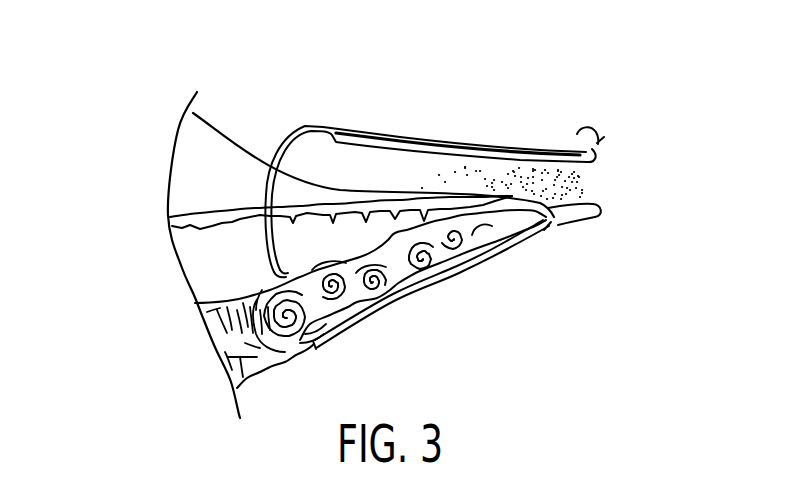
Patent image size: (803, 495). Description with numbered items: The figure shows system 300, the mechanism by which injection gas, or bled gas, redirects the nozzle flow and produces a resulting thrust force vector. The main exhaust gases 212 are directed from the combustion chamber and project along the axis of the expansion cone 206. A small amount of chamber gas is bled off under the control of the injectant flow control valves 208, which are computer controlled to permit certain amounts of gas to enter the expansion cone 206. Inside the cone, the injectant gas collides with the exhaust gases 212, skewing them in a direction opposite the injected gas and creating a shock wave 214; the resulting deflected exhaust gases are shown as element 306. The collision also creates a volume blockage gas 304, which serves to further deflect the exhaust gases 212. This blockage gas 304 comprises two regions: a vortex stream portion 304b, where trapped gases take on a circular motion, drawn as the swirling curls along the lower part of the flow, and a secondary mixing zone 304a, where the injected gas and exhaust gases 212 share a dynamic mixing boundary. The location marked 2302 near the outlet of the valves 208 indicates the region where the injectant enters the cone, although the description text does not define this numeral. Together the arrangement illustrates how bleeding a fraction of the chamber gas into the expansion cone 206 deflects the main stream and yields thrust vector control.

The system 300 is at (465, 183).
The expansion cone 206 is at (468, 139).
The exhaust gases 212 is at (580, 184).
The injectant flow control valves 208 is at (562, 224).
The cannula tip opening 2302 is at (545, 242).
The shock wave 214 is at (195, 114).
The deflected exhaust gases 306 is at (182, 151).
The volume blockage gas 304 is at (310, 292).
The secondary mixing zone 304a is at (206, 277).
The vortex stream portion 304b is at (218, 336).